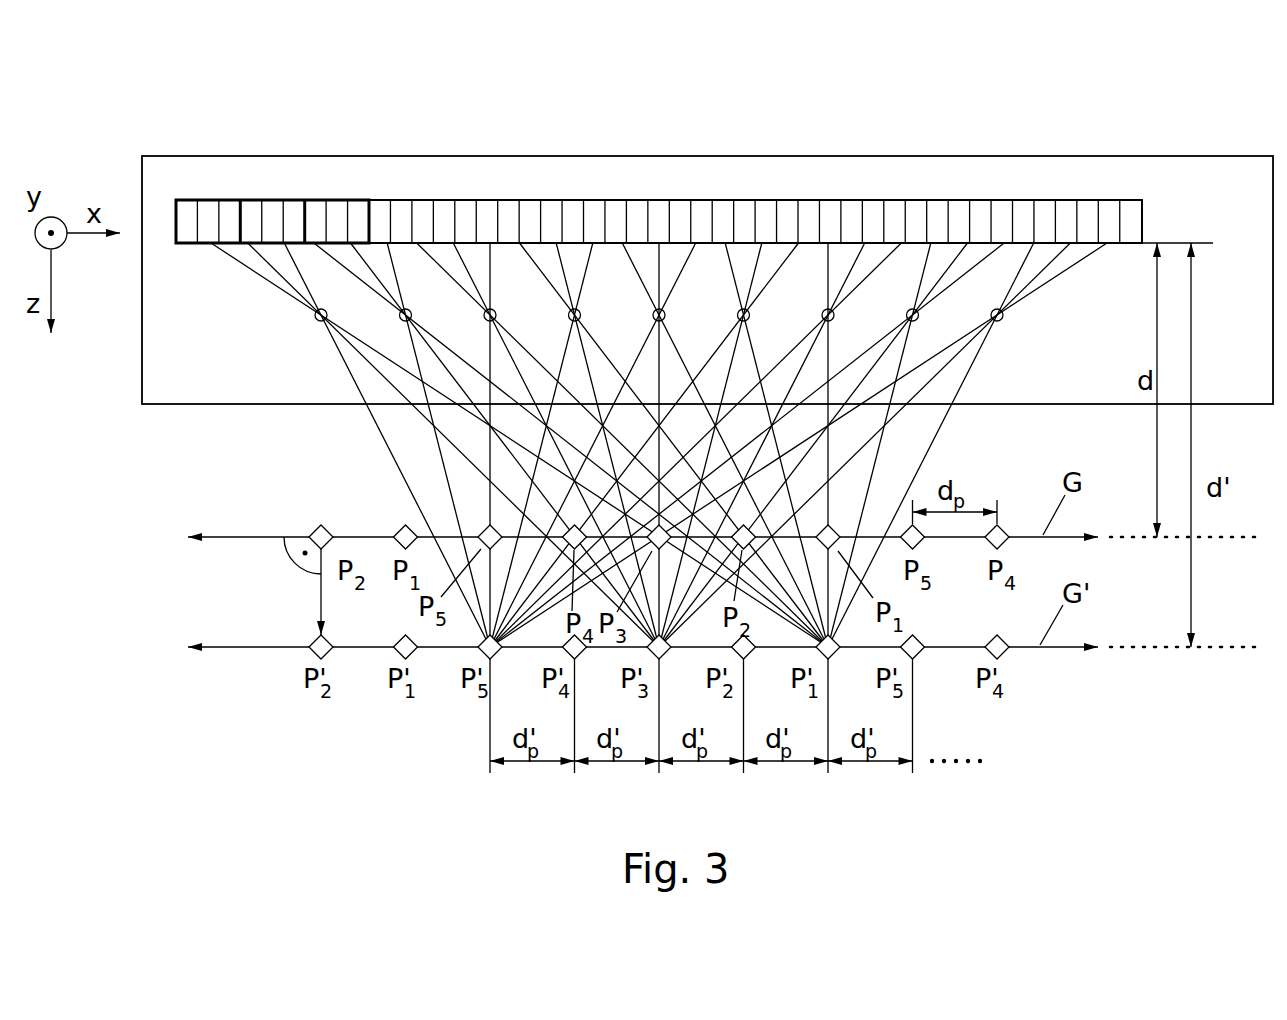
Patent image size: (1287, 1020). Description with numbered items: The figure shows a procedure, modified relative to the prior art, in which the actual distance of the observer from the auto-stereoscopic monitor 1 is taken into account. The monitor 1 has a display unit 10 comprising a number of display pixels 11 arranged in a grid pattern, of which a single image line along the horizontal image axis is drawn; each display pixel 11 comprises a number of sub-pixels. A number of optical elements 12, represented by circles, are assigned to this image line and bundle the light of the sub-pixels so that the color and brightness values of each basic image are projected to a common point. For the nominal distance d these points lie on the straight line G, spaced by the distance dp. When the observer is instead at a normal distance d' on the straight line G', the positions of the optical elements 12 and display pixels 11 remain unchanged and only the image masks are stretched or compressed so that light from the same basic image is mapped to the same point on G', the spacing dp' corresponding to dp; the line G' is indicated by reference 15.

The auto-stereoscopic monitor 1 is at (1212, 404).
The display unit 10 is at (1068, 200).
The display pixels 11 is at (295, 225).
The optical elements 12 is at (739, 311).
The viewing plane G' 15 is at (228, 647).